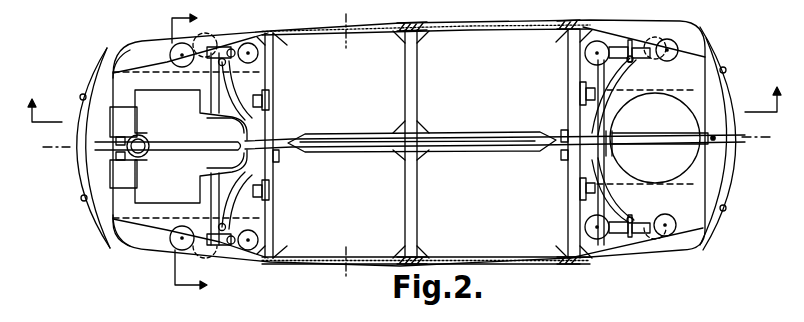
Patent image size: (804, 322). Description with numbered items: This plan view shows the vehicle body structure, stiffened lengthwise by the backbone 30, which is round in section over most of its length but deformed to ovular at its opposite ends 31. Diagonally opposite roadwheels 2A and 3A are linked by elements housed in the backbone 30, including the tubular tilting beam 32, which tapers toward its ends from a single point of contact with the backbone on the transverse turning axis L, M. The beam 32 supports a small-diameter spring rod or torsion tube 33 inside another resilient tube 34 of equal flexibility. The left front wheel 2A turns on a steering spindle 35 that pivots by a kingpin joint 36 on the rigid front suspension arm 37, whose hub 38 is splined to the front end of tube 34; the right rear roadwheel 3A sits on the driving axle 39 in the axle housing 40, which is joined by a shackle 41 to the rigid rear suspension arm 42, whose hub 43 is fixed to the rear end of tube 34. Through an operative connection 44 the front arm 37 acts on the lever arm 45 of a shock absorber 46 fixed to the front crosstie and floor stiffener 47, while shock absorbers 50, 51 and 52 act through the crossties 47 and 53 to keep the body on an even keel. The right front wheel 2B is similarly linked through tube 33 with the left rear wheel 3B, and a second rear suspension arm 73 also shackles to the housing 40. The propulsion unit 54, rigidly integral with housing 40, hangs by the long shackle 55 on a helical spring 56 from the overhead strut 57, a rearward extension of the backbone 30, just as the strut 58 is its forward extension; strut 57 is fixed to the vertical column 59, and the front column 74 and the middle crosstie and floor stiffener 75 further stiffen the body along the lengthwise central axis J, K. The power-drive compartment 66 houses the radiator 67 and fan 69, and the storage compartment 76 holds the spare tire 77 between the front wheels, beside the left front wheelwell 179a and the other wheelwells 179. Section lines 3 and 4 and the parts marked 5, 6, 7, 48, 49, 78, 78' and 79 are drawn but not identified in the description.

The left front wheel 2A is at (584, 52).
The right front wheel 2B is at (584, 229).
The section line 3- 3 is at (403, 94).
The right rear roadwheel 3A is at (259, 239).
The left rear wheel 3B is at (259, 57).
The section line 4- 4 is at (636, 273).
The hull end section 5 is at (136, 64).
The right bow member 6 is at (700, 70).
The left bow member 7 is at (113, 85).
The backbone 30 is at (440, 153).
The ovular ends of backbone 31 is at (278, 155).
The tubular tilting beam 32 is at (477, 153).
The spring rod or torsion tube 33 is at (614, 144).
The resilient tube 34 is at (537, 136).
The steering spindle 35 is at (642, 62).
The kingpin joint 36 is at (630, 62).
The front suspension arm 37 is at (604, 98).
The front hub 38 is at (566, 157).
The driving axle 39 is at (177, 250).
The axle housing 40 is at (207, 180).
The shackle 41 is at (207, 236).
The rear suspension arm 42 is at (240, 182).
The rear hub 43 is at (270, 190).
The operative connection 44 is at (623, 136).
The lever arm 45 is at (580, 103).
The shock absorber 46 is at (579, 90).
The front crosstie and floor stiffener 47 is at (568, 63).
The lower right strut 48 is at (604, 165).
The right post lower clamp 49 is at (580, 183).
The shock absorber 50 is at (582, 191).
The shock absorber 51 is at (270, 97).
The shock absorber 52 is at (263, 200).
The rear crosstie 53 is at (274, 73).
The propulsion unit 54 is at (172, 122).
The long shackle 55 is at (147, 138).
The helical spring 56 is at (144, 156).
The overhead strut 57 is at (204, 152).
The front strut 58 is at (672, 144).
The vertical column 59 is at (263, 106).
The power-drive compartment 66 is at (167, 93).
The radiator 67 is at (123, 122).
The fan 69 is at (123, 174).
The rear suspension arm 73 is at (232, 107).
The front column 74 is at (572, 135).
The middle crosstie and floor stiffener 75 is at (418, 215).
The storage compartment 76 is at (694, 193).
The spare tire 77 is at (693, 118).
The rail end block 78 is at (567, 143).
The right hull end 78' is at (722, 139).
The right outer wheel 79 is at (678, 240).
The wheelwell 179 is at (165, 80).
The left front wheelwell 179a is at (637, 92).
The lengthwise central body axis line j—k J is at (49, 147).
The lengthwise central body axis line j—k K is at (766, 137).
The transverse turning axis line l—m L is at (345, 24).
The transverse turning axis line l—m M is at (347, 272).